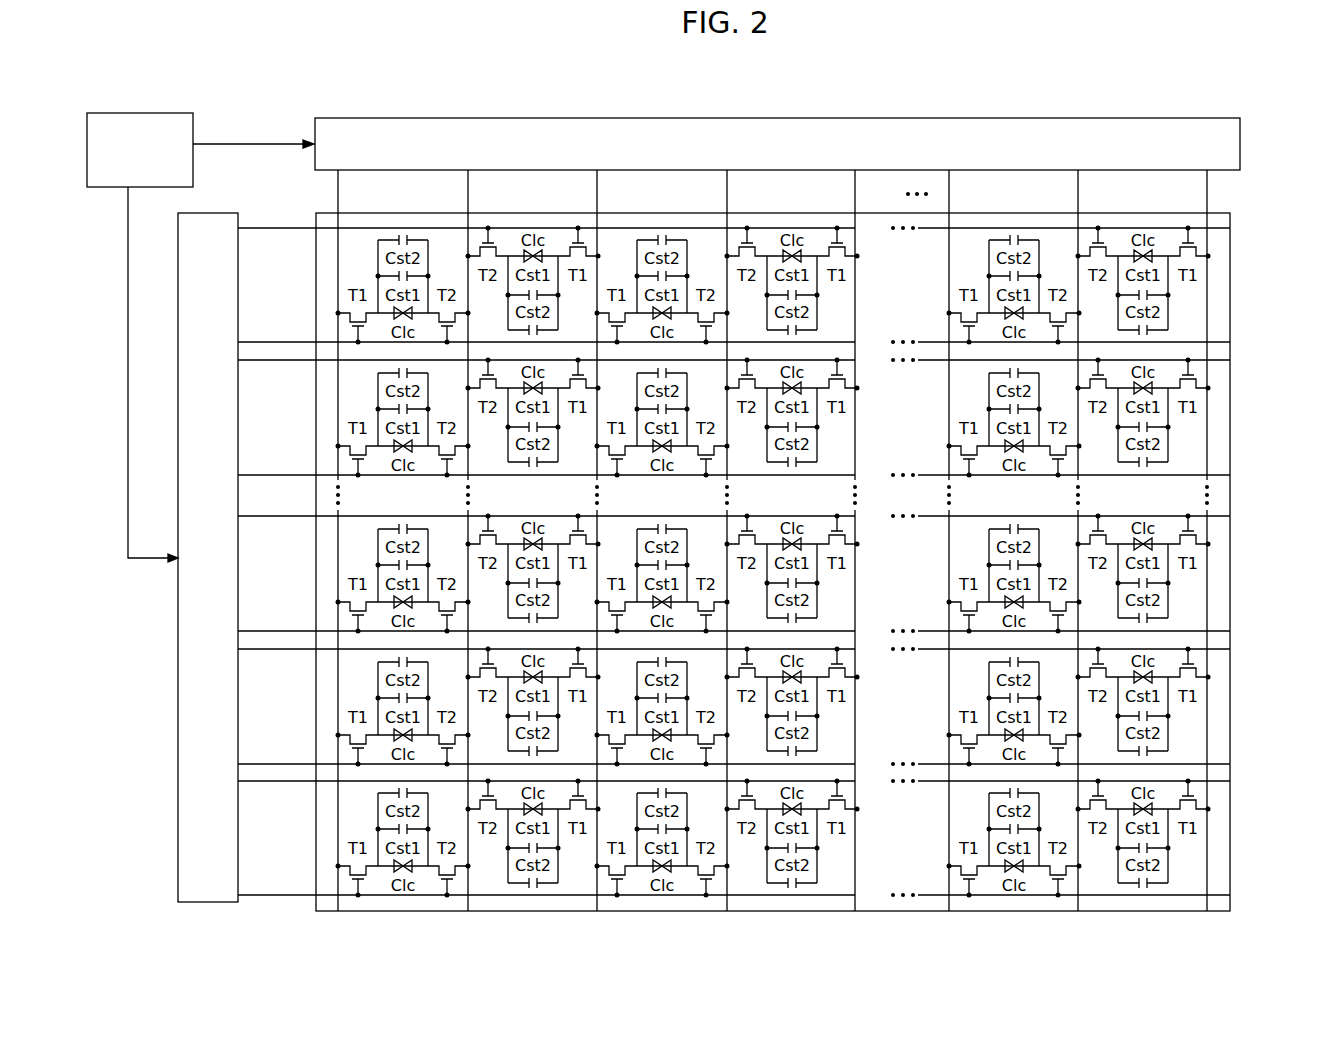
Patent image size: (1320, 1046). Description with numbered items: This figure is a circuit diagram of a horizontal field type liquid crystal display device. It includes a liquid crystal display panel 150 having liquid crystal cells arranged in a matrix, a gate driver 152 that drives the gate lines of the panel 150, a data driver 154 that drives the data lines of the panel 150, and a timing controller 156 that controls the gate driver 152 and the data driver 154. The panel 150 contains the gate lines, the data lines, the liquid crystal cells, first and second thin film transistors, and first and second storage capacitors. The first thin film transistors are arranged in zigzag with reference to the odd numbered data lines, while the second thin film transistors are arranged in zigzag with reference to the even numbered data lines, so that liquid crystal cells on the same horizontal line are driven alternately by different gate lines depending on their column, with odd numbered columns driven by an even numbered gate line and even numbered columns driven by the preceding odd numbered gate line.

The liquid crystal display panel 150 is at (1230, 495).
The gate driver 152 is at (178, 708).
The data driver 154 is at (1240, 143).
The timing controller 156 is at (140, 113).